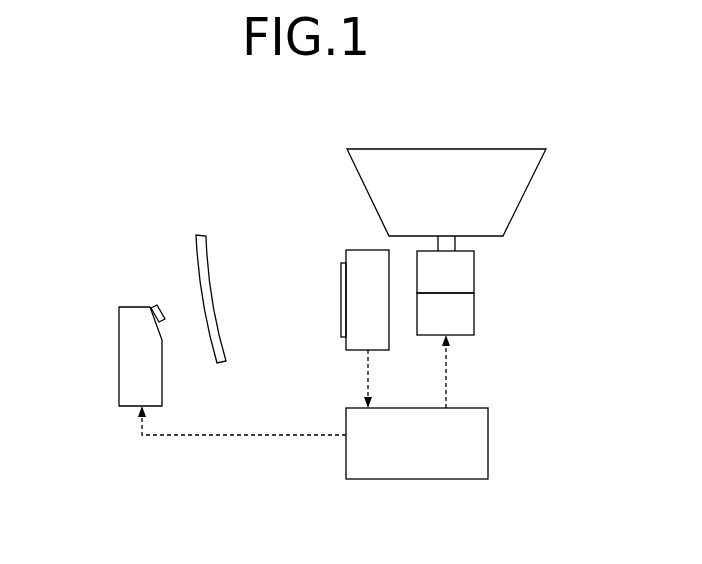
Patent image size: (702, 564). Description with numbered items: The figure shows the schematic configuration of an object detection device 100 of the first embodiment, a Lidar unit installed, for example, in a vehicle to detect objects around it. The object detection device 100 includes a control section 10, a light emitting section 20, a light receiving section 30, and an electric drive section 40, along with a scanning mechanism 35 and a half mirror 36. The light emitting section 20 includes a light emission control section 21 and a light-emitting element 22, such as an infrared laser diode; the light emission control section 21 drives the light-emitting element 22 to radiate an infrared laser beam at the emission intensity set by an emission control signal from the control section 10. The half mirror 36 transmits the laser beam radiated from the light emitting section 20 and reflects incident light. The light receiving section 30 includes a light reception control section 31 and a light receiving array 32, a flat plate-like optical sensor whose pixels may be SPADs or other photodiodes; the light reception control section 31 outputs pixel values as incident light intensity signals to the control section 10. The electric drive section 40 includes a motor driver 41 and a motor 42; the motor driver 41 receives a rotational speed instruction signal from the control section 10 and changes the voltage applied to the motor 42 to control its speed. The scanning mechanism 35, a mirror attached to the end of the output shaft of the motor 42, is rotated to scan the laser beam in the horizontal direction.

The object detection device 100 is at (210, 165).
The control section 10 is at (431, 454).
The light emitting section 20 is at (106, 288).
The light emission control section 21 is at (153, 376).
The light-emitting element 22 is at (160, 306).
The light receiving section 30 is at (322, 304).
The light reception control section 31 is at (380, 314).
The light receiving array 32 is at (341, 278).
The scanning mechanism 35 is at (524, 188).
The half mirror 36 is at (209, 263).
The electric drive section 40 is at (498, 297).
The motor driver 41 is at (458, 328).
The motor 42 is at (458, 285).